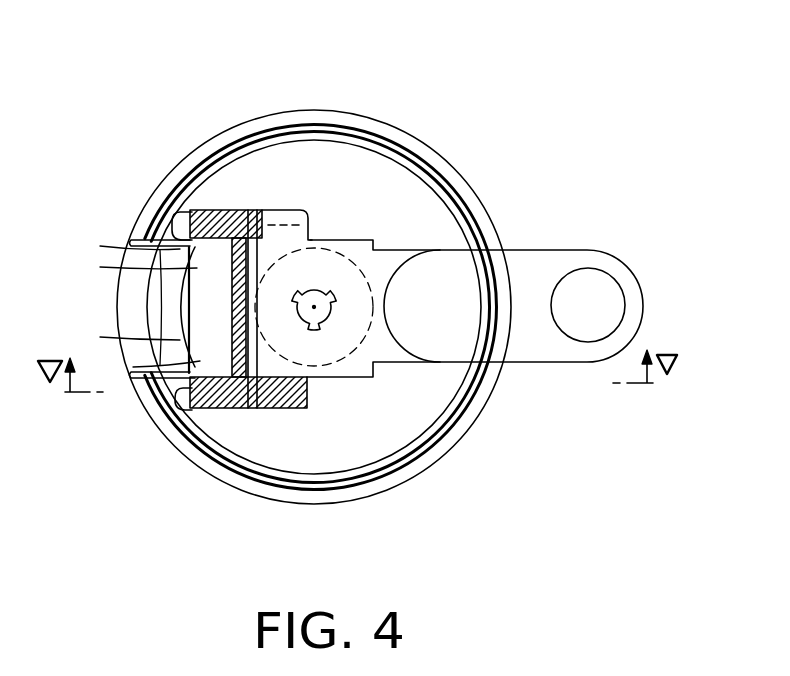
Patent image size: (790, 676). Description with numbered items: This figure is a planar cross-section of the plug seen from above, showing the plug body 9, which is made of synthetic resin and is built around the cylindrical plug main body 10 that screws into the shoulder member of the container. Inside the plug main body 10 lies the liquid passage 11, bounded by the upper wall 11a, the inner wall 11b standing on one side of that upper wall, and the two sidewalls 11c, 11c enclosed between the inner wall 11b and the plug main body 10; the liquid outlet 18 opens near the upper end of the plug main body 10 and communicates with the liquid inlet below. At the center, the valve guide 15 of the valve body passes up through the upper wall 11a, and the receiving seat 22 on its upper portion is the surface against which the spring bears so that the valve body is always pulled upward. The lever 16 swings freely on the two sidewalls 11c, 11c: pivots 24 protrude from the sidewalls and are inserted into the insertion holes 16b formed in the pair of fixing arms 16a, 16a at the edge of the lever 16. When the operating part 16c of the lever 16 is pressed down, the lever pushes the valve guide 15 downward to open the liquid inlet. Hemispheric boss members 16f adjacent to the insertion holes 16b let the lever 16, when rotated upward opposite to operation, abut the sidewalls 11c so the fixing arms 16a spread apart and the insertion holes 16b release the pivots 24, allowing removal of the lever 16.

The plug body 9 is at (336, 35).
The plug main body 10 is at (436, 147).
The liquid passage 11 is at (165, 283).
The upper wall 11a is at (355, 168).
The inner wall 11b is at (230, 312).
The sidewall 11c is at (130, 257).
The valve guide 15 is at (317, 328).
The lever 16 is at (582, 249).
The fixing arm 16a is at (180, 222).
The insertion hole 16b is at (203, 212).
The operating part 16c is at (608, 290).
The boss member 16f is at (253, 210).
The liquid outlet 18 is at (163, 313).
The receiving seat 22 is at (346, 353).
The pivot 24 is at (226, 212).